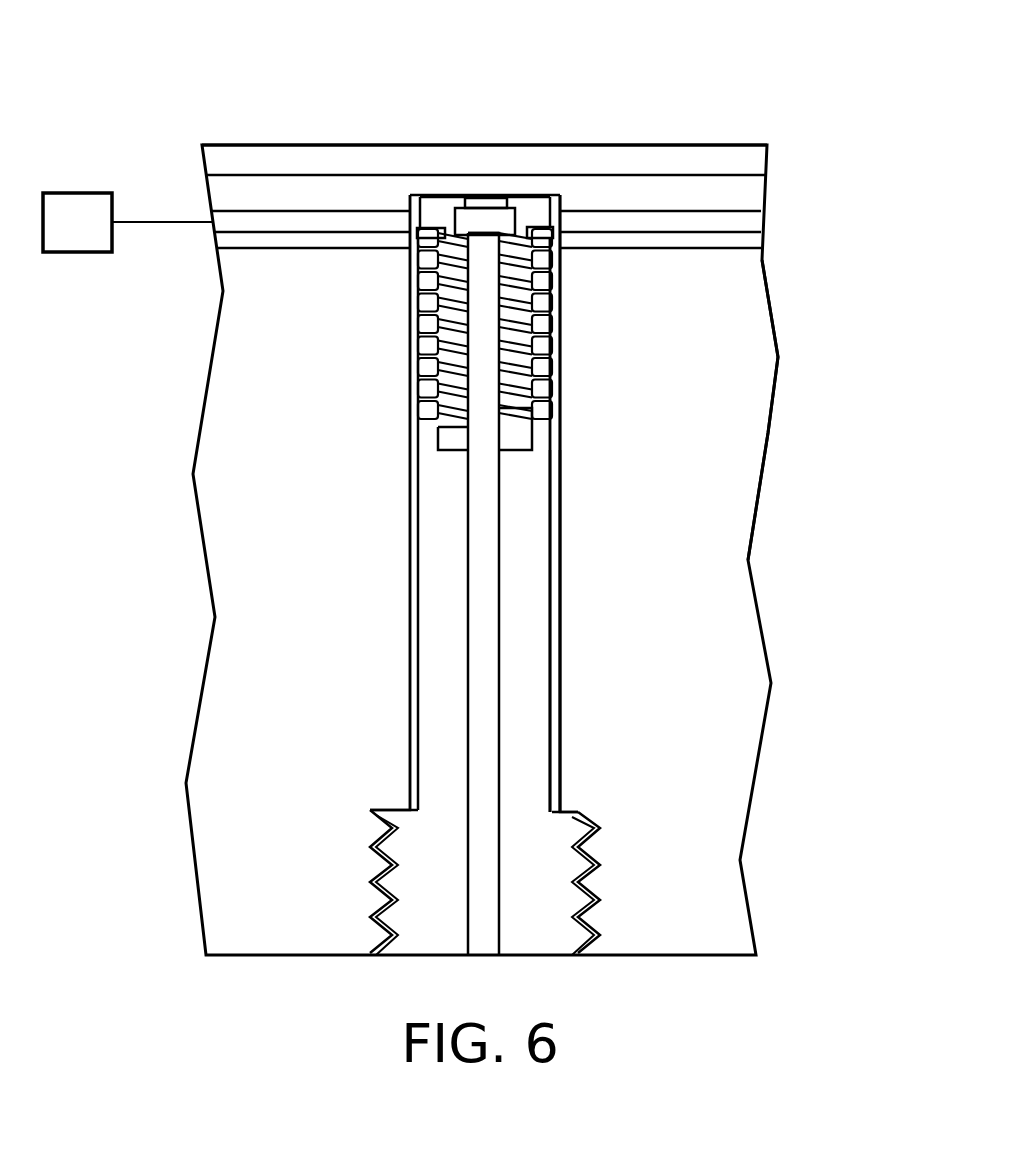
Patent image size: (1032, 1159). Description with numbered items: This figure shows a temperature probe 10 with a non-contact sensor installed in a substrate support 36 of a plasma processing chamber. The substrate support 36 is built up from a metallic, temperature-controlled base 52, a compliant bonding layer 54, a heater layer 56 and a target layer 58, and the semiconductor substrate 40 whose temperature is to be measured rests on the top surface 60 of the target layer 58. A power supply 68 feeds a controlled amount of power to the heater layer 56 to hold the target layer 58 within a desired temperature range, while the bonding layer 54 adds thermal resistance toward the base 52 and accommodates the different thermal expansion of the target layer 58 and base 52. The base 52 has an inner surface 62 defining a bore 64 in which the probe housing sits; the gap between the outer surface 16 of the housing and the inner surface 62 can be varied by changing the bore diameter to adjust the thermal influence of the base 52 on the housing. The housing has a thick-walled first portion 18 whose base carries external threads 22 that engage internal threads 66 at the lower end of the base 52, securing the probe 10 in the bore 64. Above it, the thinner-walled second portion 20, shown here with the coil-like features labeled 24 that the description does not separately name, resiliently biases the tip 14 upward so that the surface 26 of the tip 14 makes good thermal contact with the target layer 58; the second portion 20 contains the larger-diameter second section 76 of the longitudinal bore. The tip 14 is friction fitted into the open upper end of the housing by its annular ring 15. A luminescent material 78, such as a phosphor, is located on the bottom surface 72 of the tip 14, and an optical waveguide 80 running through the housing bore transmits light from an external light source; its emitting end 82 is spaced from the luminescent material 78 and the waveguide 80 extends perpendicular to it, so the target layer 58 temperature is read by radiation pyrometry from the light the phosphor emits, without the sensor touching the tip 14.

The temperature probe 10 is at (572, 600).
The tip 14 is at (428, 172).
The annular ring 15 is at (430, 240).
The outer surface 16 is at (556, 742).
The first portion 18 is at (572, 657).
The second portion 20 is at (558, 324).
The external threads 22 is at (395, 842).
The spring coil 24 is at (555, 280).
The surface of the tip 26 is at (533, 197).
The substrate support 36 is at (780, 436).
The semiconductor substrate 40 is at (727, 160).
The base 52 is at (762, 762).
The bonding layer 54 is at (760, 240).
The heater layer 56 is at (760, 222).
The target layer 58 is at (760, 198).
The top surface 60 is at (665, 175).
The inner surface 62 is at (553, 492).
The bore 64 is at (558, 545).
The internal threads 66 is at (372, 835).
The power supply 68 is at (90, 252).
The bottom surface 72 is at (459, 208).
The second section 76 is at (440, 440).
The luminescent material 78 is at (500, 198).
The optical waveguide 80 is at (484, 700).
The end of the optical waveguide 82 is at (485, 232).